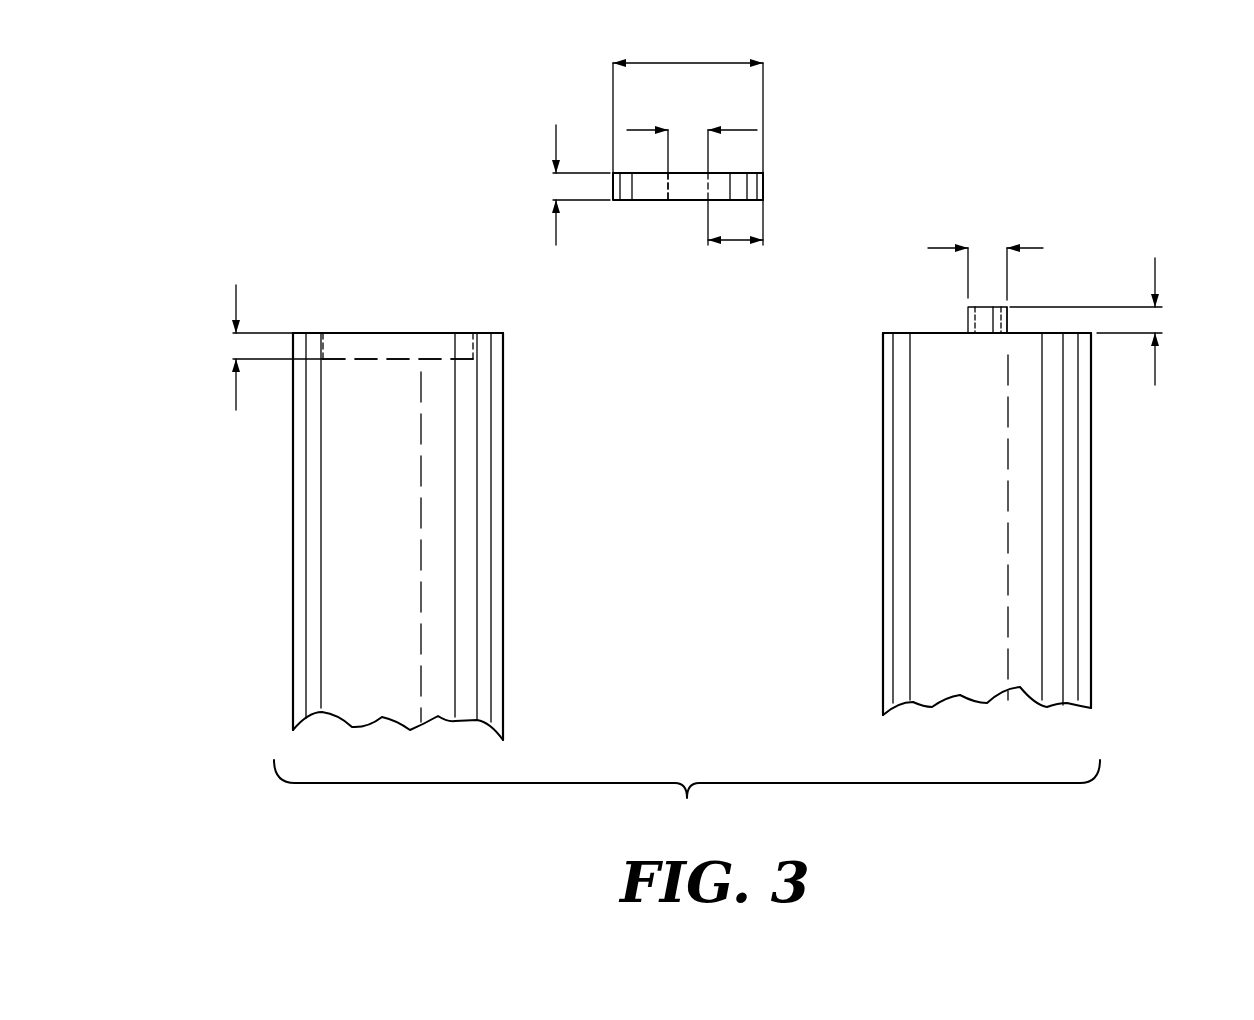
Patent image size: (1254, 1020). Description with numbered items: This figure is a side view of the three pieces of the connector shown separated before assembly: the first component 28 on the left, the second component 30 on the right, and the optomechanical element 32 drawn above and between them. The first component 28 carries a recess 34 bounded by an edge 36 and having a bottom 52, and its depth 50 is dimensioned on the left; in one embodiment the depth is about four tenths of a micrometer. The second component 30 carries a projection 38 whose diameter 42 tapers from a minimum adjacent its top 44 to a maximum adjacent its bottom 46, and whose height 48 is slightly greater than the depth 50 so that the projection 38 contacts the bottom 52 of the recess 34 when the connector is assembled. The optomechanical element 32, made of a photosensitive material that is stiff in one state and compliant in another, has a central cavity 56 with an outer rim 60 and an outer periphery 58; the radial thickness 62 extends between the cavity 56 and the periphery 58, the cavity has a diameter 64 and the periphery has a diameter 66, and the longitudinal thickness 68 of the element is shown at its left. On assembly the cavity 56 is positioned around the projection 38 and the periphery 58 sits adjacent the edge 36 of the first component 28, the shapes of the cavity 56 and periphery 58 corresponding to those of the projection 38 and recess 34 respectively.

The first component 28 is at (294, 562).
The second component 30 is at (1091, 497).
The optomechanical element 32 is at (781, 153).
The recess 34 is at (400, 290).
The edge 36 is at (324, 358).
The projection 38 is at (960, 326).
The diameter of the projection 42 is at (940, 248).
The top of the projection 44 is at (1004, 303).
The bottom of the projection 46 is at (952, 326).
The height of the projection 48 is at (1155, 268).
The depth of the recess 50 is at (237, 393).
The bottom of the recess 52 is at (406, 357).
The cavity 56 is at (708, 183).
The periphery 58 is at (765, 183).
The outer rim 60 is at (668, 200).
The radial thickness 62 is at (737, 240).
The diameter of the cavity 64 is at (743, 130).
The diameter of the periphery 66 is at (690, 62).
The longitudinal thickness 68 is at (556, 136).